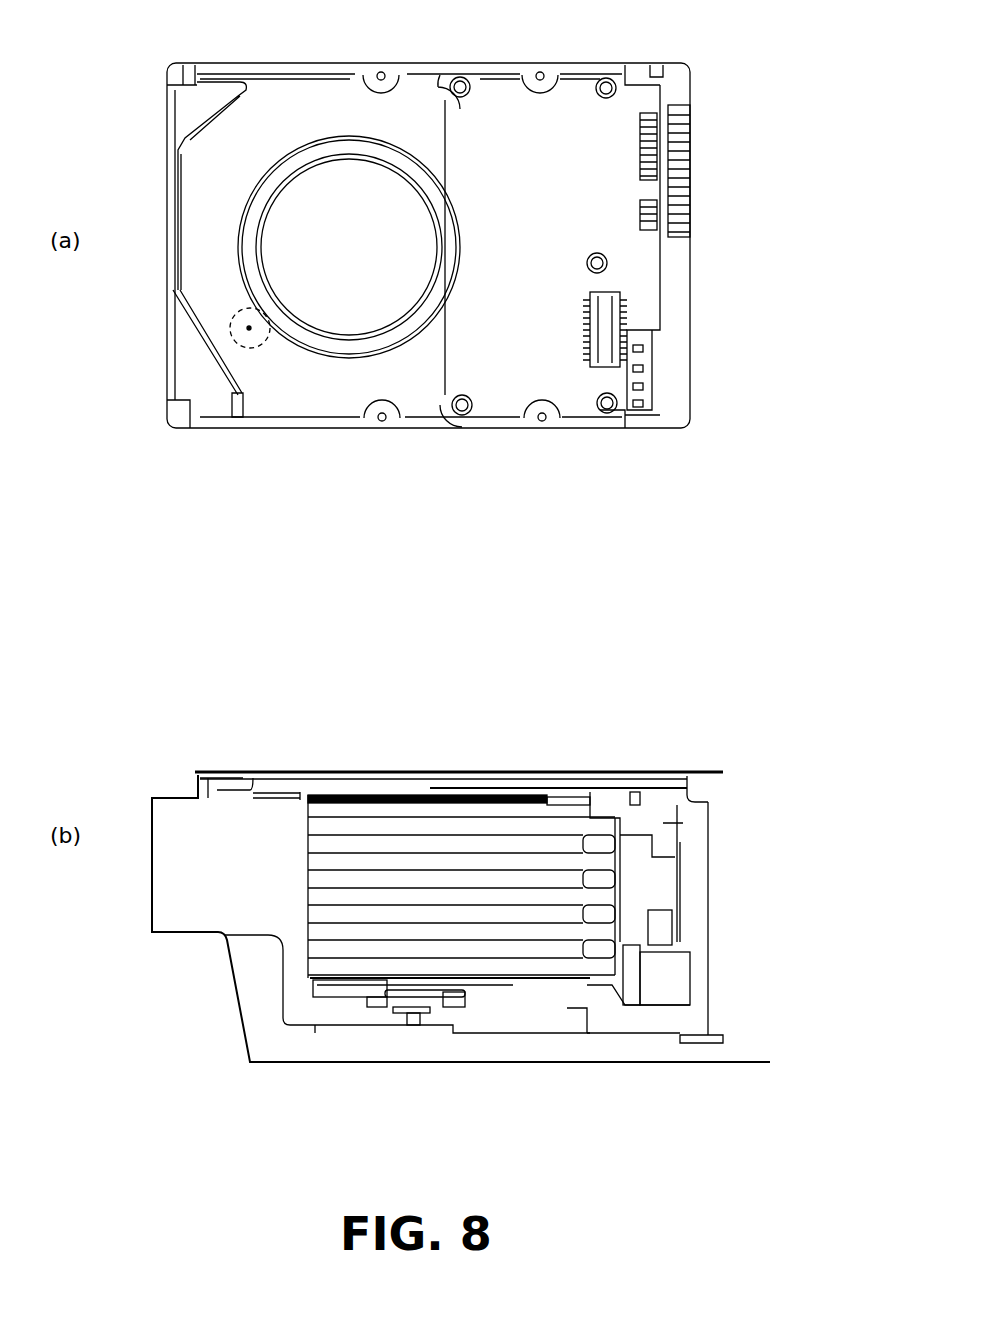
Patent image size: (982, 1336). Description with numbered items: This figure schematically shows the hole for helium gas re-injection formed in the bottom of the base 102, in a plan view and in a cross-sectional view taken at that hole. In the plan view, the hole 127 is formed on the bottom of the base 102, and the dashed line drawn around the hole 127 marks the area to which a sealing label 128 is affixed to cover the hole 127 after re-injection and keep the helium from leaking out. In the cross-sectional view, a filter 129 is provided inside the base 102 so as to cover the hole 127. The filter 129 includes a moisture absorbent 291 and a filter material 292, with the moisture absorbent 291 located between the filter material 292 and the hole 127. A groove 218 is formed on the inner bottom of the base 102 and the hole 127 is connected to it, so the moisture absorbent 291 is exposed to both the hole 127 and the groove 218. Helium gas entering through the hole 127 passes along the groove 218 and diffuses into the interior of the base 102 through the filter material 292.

The base 102 is at (486, 63).
The hole 127 is at (248, 333).
The sealing label 128 is at (243, 312).
The groove 218 is at (385, 1000).
The moisture absorbent 291 is at (447, 993).
The filter material 292 is at (467, 995).
The filter 129 is at (690, 1148).